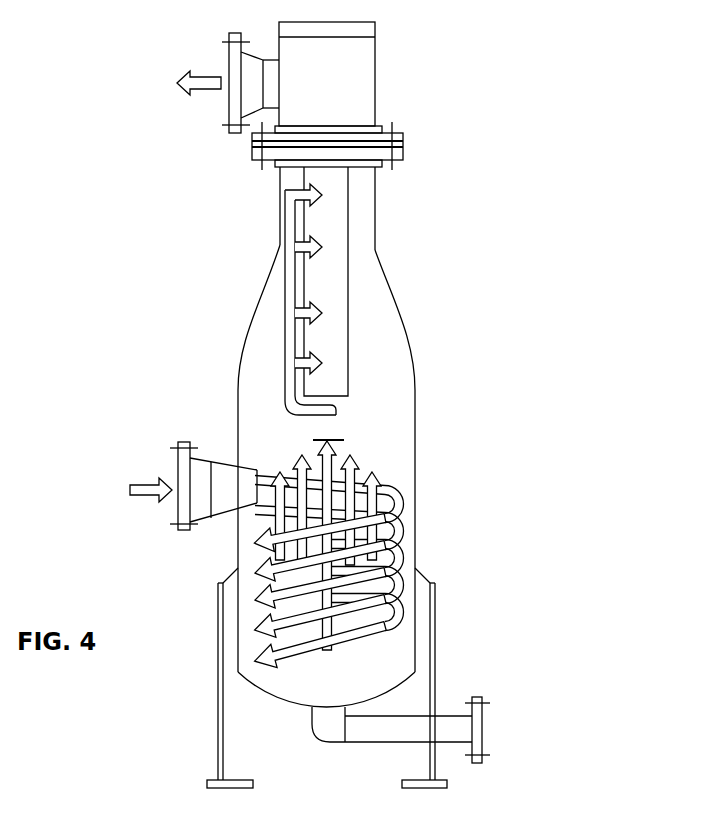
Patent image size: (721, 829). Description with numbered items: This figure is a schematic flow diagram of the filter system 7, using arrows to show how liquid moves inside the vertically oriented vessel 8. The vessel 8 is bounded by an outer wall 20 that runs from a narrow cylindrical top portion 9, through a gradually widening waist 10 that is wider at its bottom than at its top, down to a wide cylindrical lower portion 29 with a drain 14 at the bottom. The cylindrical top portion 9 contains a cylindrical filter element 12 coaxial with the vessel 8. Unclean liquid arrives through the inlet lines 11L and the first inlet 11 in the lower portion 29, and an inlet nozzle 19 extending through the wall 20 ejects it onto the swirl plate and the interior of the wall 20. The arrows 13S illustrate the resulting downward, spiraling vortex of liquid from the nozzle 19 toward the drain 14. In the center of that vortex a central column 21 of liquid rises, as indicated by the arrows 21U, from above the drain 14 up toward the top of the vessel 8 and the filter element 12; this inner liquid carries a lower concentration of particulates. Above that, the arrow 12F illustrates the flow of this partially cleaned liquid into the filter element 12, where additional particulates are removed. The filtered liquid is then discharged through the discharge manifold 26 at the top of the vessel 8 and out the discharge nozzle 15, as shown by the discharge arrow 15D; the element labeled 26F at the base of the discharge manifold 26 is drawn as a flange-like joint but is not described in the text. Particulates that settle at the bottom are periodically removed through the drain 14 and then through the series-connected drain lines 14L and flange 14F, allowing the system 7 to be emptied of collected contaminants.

The filter system 7 is at (562, 665).
The vessel 8 is at (536, 407).
The cylindrical top portion 9 is at (399, 219).
The waist 10 is at (436, 307).
The first inlet 11 is at (185, 535).
The inlet lines 11L is at (140, 467).
The filter element 12 is at (348, 280).
The arrow illustrating flow of liquid into the filter element 12F is at (275, 281).
The arrows illustrating downward flow 13S is at (417, 517).
The drain 14 is at (323, 712).
The flange 14F is at (477, 697).
The drain lines 14L is at (368, 740).
The discharge nozzle 15 is at (232, 108).
The discharge arrow 15D is at (202, 78).
The inlet nozzle 19 is at (230, 453).
The outer wall 20 is at (415, 392).
The central column 21 is at (328, 429).
The upward flow arrows 21U is at (342, 465).
The discharge manifold 26 is at (365, 80).
The motor flange 26F is at (424, 146).
The lower portion 29 is at (474, 545).